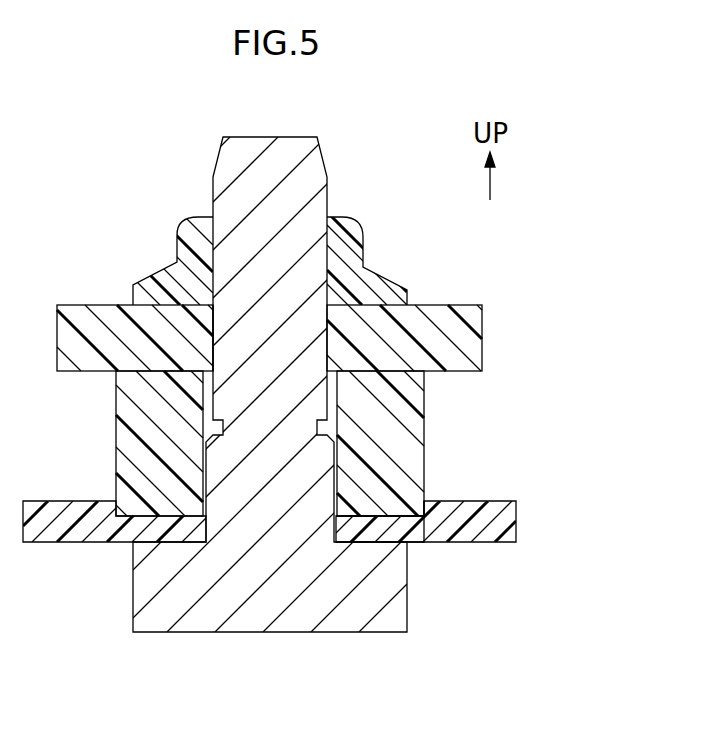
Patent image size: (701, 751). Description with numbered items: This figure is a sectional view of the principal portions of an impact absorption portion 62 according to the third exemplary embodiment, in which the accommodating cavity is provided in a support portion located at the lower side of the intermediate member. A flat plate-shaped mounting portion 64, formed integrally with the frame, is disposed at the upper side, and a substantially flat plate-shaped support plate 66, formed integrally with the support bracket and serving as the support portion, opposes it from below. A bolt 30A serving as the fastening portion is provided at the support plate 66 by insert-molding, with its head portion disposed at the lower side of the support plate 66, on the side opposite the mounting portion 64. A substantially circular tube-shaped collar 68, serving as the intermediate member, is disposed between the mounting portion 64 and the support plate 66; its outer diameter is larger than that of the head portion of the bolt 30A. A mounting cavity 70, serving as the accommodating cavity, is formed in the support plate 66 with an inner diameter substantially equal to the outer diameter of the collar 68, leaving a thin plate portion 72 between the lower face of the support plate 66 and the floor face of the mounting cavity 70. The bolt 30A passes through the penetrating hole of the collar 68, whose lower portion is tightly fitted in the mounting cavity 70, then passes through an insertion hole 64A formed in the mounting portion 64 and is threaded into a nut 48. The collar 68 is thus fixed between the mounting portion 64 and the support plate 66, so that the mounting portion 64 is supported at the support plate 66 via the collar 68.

The bolt 30A is at (307, 170).
The nut 48 is at (190, 228).
The impact absorption portion 62 is at (554, 379).
The mounting portion 64 is at (470, 303).
The insertion hole 64A is at (205, 288).
The support plate 66 is at (517, 522).
The collar 68 is at (203, 402).
The mounting cavity 70 is at (410, 503).
The thin plate portion 72 is at (377, 525).